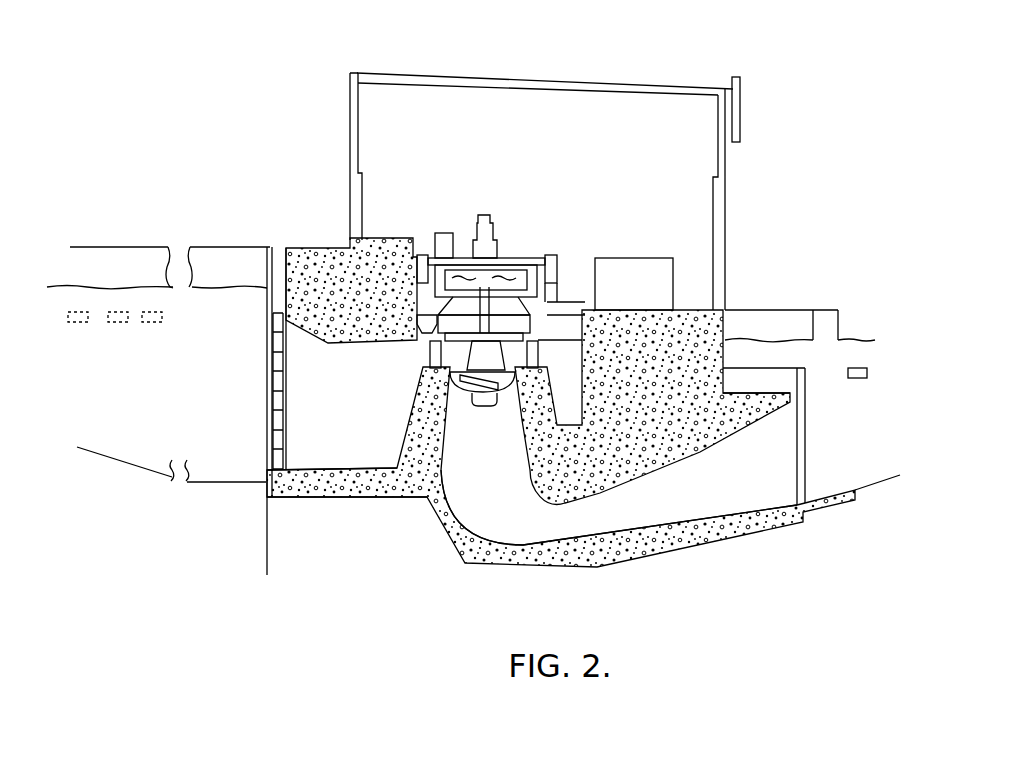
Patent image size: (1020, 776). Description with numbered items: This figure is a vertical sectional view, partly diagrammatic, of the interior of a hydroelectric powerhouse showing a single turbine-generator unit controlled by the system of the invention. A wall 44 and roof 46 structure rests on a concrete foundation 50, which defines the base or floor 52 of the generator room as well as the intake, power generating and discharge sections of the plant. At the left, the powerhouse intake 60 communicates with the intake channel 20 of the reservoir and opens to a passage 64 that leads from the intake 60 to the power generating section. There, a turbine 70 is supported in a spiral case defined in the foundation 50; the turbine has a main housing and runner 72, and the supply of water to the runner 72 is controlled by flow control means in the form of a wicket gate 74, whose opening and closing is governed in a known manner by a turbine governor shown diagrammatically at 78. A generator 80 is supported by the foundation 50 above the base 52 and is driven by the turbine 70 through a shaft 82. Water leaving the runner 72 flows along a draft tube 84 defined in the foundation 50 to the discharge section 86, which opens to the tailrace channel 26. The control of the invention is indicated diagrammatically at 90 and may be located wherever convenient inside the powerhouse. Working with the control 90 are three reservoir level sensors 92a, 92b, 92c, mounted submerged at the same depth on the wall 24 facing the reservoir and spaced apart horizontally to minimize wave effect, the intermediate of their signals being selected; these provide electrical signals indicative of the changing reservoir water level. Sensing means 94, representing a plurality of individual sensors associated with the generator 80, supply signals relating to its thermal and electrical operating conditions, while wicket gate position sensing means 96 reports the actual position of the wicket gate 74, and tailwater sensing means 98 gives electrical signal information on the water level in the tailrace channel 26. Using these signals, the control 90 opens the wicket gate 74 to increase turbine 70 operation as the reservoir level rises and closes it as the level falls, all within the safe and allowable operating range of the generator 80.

The intake channel 20 is at (163, 419).
The wall 24 is at (203, 247).
The tailrace channel 26 is at (843, 460).
The wall 44 is at (349, 113).
The roof 46 is at (545, 82).
The foundation 50 is at (327, 281).
The base or floor 52 is at (693, 310).
The powerhouse intake 60 is at (261, 435).
The passage 64 is at (348, 452).
The turbine 70 is at (513, 310).
The runner 72 is at (472, 398).
The wicket gate 74 is at (428, 352).
The turbine governor 78 is at (558, 302).
The generator 80 is at (498, 257).
The shaft 82 is at (485, 300).
The draft tube 84 is at (469, 522).
The discharge section 86 is at (808, 477).
The control 90 is at (664, 250).
The reservoir level sensor 92a is at (78, 322).
The reservoir level sensor 92b is at (118, 322).
The reservoir level sensor 92c is at (152, 322).
The sensing means 94 is at (442, 232).
The wicket gate position sensing means 96 is at (427, 325).
The tailwater sensing means 98 is at (857, 378).